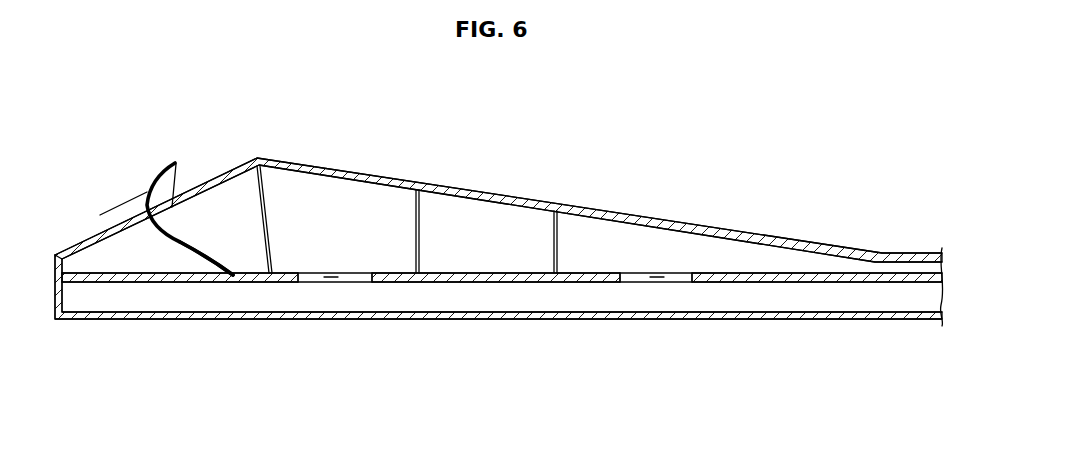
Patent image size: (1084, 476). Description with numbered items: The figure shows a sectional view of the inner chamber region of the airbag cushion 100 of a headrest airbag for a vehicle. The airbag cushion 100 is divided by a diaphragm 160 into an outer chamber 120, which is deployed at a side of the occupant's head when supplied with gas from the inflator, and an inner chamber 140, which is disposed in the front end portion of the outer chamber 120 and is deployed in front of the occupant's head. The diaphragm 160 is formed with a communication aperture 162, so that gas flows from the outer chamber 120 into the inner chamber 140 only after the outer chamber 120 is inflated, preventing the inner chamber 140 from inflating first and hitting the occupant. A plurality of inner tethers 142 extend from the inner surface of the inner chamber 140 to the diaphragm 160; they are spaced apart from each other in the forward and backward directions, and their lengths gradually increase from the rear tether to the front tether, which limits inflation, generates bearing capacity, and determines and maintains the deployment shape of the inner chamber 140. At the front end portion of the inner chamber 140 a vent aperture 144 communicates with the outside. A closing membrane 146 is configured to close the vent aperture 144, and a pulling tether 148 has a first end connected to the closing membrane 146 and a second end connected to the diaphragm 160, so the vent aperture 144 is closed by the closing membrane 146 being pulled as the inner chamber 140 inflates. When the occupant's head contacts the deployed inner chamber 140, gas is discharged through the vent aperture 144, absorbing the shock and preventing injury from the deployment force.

The airbag cushion 100 is at (577, 191).
The outer chamber 120 is at (663, 318).
The inner chamber 140 is at (357, 171).
The inner tethers 142 is at (267, 212).
The vent aperture 144 is at (145, 189).
The closing membrane 146 is at (162, 167).
The pulling tether 148 is at (193, 253).
The diaphragm 160 is at (480, 278).
The communication aperture 162 is at (330, 279).